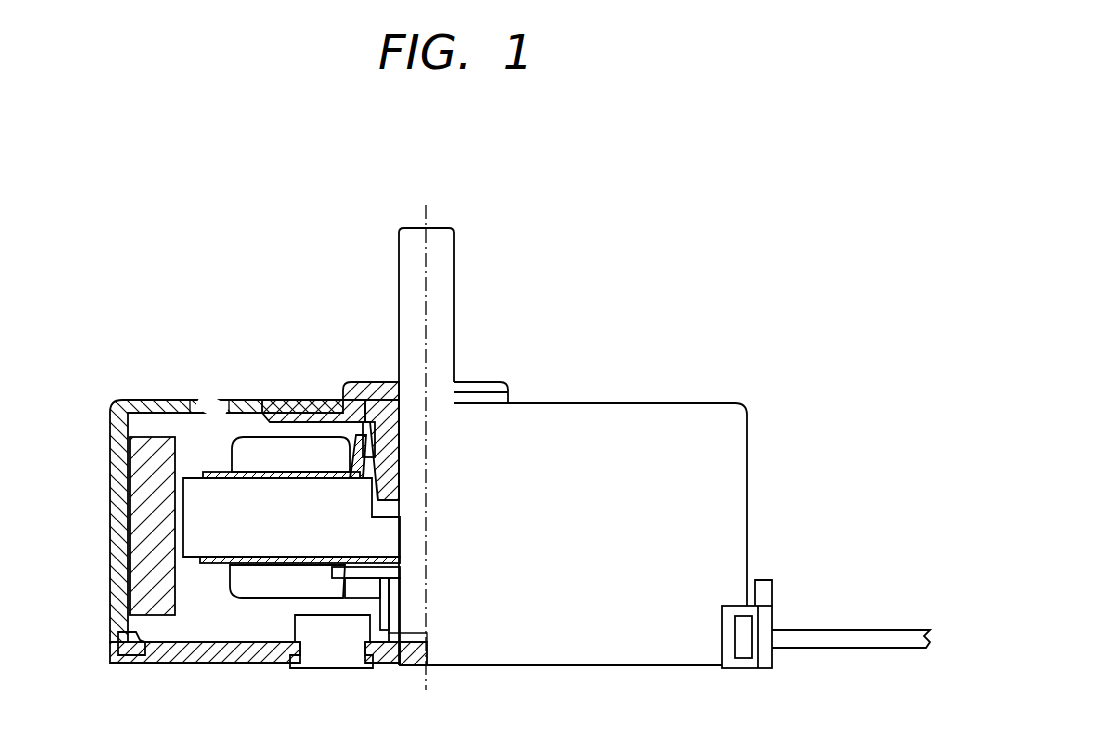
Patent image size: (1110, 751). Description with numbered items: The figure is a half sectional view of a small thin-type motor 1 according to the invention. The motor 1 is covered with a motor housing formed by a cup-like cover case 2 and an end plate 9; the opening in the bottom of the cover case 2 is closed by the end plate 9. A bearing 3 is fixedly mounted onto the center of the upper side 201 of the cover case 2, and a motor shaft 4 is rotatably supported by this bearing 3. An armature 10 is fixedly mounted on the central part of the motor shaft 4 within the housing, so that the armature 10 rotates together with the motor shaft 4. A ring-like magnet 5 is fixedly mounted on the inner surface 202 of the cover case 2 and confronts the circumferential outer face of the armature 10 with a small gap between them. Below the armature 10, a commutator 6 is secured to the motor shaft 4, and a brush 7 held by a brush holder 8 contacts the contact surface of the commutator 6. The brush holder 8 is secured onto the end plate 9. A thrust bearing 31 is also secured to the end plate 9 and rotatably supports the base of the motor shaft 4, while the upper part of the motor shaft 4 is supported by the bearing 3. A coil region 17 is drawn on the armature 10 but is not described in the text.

The motor 1 is at (645, 287).
The cover case 2 is at (140, 400).
The bearing 3 is at (360, 384).
The motor shaft 4 is at (447, 293).
The magnet 5 is at (135, 540).
The commutator 6 is at (388, 572).
The brush 7 is at (392, 630).
The brush holder 8 is at (318, 664).
The end plate 9 is at (168, 658).
The armature 10 is at (228, 540).
The coil 17 is at (284, 443).
The thrust bearing 31 is at (428, 645).
The upper side 201 is at (157, 400).
The inner surface 202 is at (140, 431).